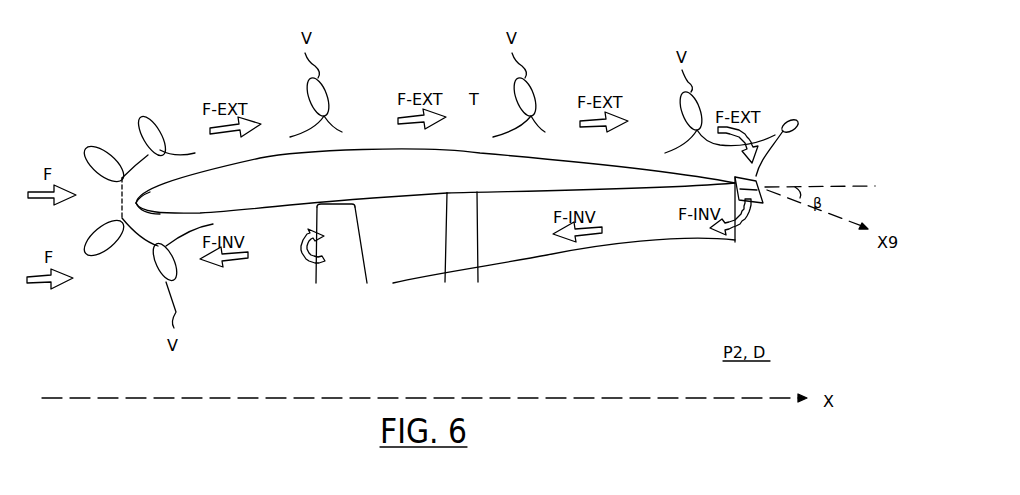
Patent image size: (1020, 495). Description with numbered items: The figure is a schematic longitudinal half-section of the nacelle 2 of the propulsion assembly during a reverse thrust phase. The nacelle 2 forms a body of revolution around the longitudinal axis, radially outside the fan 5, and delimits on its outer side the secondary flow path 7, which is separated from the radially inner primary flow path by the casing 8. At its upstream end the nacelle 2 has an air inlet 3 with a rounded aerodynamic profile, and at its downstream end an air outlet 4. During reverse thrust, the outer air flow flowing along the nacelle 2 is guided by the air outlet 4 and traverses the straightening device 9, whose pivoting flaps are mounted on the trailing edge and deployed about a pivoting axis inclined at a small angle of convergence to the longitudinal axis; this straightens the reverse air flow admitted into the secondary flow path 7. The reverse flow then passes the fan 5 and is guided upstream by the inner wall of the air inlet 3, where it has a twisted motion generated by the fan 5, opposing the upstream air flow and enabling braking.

The nacelle 2 is at (385, 189).
The air inlet 3 is at (176, 213).
The air outlet 4 is at (614, 186).
The fan 5 is at (337, 281).
The secondary flow path 7 is at (407, 261).
The casing 8 is at (506, 281).
The straightening device 9 is at (768, 178).